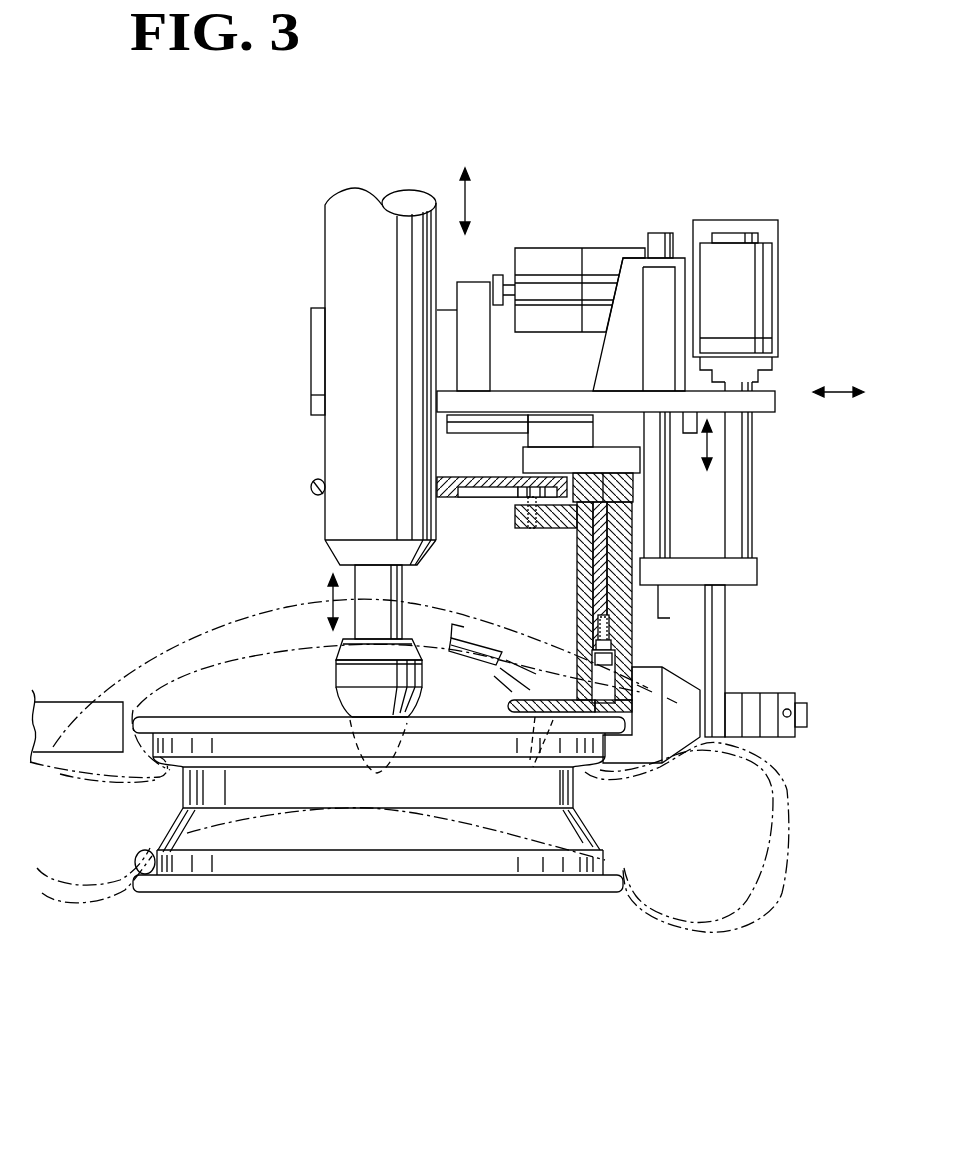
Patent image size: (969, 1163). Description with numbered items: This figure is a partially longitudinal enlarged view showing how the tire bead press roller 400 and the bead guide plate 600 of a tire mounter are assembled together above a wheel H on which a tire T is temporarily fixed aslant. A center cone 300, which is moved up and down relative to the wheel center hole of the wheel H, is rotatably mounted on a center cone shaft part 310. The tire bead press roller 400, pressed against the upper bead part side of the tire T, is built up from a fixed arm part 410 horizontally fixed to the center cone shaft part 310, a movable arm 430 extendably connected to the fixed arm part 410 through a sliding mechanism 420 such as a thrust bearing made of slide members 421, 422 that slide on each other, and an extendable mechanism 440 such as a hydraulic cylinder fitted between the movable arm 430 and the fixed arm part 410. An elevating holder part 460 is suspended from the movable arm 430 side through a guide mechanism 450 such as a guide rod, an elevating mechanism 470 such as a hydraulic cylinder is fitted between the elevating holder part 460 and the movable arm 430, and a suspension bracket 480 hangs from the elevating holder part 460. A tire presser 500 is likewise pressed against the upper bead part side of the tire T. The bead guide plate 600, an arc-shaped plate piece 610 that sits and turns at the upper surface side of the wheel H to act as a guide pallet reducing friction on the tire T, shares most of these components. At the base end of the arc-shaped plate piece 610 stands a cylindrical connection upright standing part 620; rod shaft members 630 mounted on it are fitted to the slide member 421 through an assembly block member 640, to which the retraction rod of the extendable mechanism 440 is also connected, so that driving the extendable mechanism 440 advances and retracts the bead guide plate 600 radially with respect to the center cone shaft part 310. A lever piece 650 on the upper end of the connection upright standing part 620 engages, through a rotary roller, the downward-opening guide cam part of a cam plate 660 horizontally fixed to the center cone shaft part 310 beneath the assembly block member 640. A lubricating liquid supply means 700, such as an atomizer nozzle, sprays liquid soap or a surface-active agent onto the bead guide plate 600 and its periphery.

The center cone shaft part 310 is at (323, 238).
The fixed arm part 410 is at (310, 357).
The sliding mechanism 420 is at (462, 437).
The slide member 421 is at (530, 463).
The slide member 422 is at (540, 440).
The movable arm 430 is at (765, 415).
The extendable mechanism 440 is at (572, 248).
The guide mechanism 450 is at (662, 517).
The elevating holder part 460 is at (760, 577).
The elevating mechanism 470 is at (773, 268).
The suspension bracket 480 is at (718, 672).
The tire bead press roller 400 is at (647, 667).
The tire presser 500 is at (75, 700).
The center cone 300 is at (350, 698).
The bead guide plate 600 is at (508, 722).
The arc-shaped plate piece 610 is at (545, 718).
The cylindrical connection upright standing part 620 is at (583, 590).
The rod shaft members 630 is at (581, 578).
The assembly block member 640 is at (638, 490).
The lever piece 650 is at (558, 529).
The cam plate 660 is at (311, 486).
The lubricating liquid supply means 700 is at (476, 655).
The wheel H is at (390, 893).
The tire T is at (757, 922).